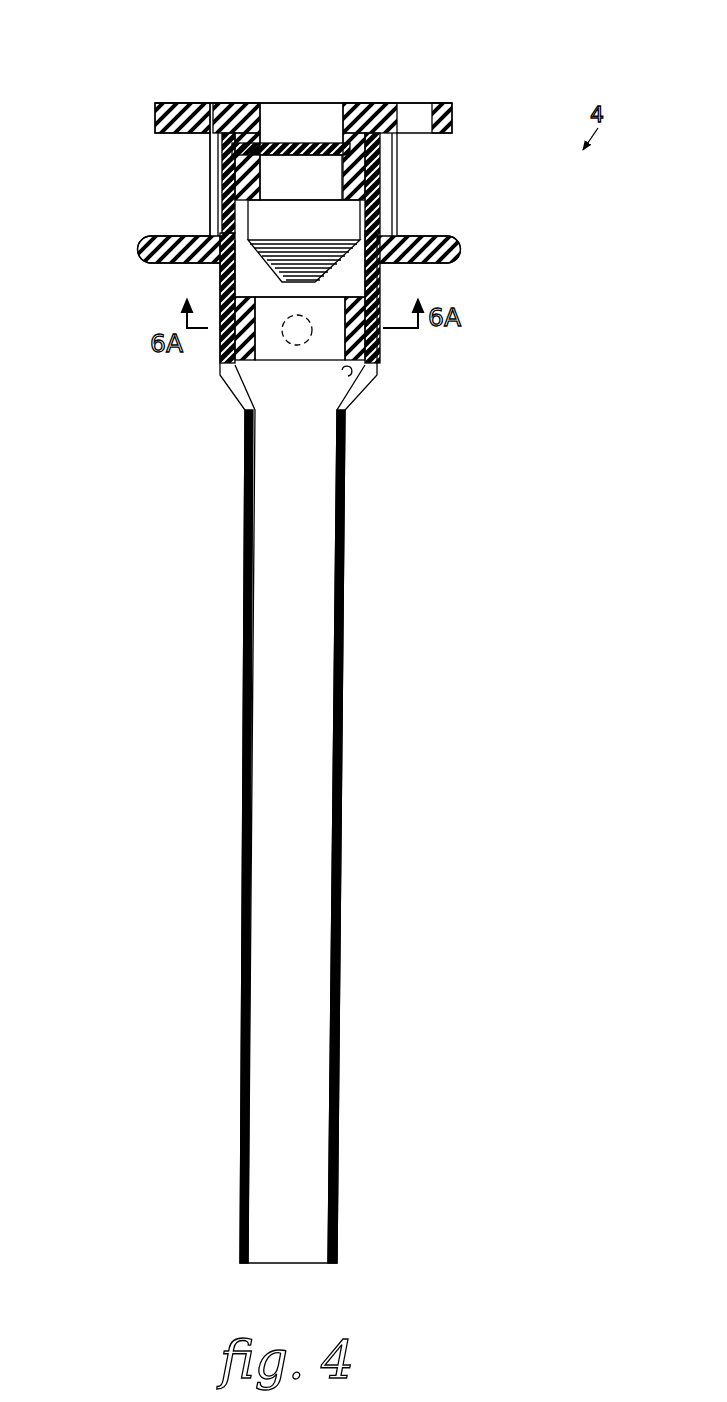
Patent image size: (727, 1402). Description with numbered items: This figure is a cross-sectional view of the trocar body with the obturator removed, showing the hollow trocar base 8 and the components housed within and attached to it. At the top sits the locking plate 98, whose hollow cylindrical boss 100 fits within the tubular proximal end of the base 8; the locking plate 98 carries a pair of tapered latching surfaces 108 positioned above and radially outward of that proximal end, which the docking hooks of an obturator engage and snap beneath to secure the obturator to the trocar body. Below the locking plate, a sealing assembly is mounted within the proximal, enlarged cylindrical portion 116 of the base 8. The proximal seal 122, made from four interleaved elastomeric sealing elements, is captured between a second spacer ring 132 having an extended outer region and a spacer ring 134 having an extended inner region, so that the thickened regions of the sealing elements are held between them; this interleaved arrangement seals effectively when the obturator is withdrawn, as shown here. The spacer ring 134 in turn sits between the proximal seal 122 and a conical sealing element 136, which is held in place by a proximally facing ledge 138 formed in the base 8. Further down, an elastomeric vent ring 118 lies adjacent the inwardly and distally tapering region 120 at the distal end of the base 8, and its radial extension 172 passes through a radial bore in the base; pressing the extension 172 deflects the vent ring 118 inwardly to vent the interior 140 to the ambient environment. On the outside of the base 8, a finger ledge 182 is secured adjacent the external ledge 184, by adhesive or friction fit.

The locking plate 98 is at (453, 117).
The hollow cylindrical boss 100 is at (343, 112).
The tapered latching surfaces 108 is at (433, 103).
The proximal seal 122 is at (283, 128).
The second spacer ring 132 is at (397, 143).
The spacer ring 134 is at (388, 182).
The enlarged cylindrical portion 116 is at (215, 158).
The proximally facing ledge 138 is at (215, 195).
The trocar base 8 is at (395, 221).
The conical sealing element 136 is at (380, 270).
The elastomeric vent ring 118 is at (367, 345).
The interior 140 is at (260, 277).
The radial extension 172 is at (288, 338).
The inwardly and distally tapering region 120 is at (347, 395).
The finger ledge 182 is at (140, 243).
The external ledge 184 is at (218, 260).